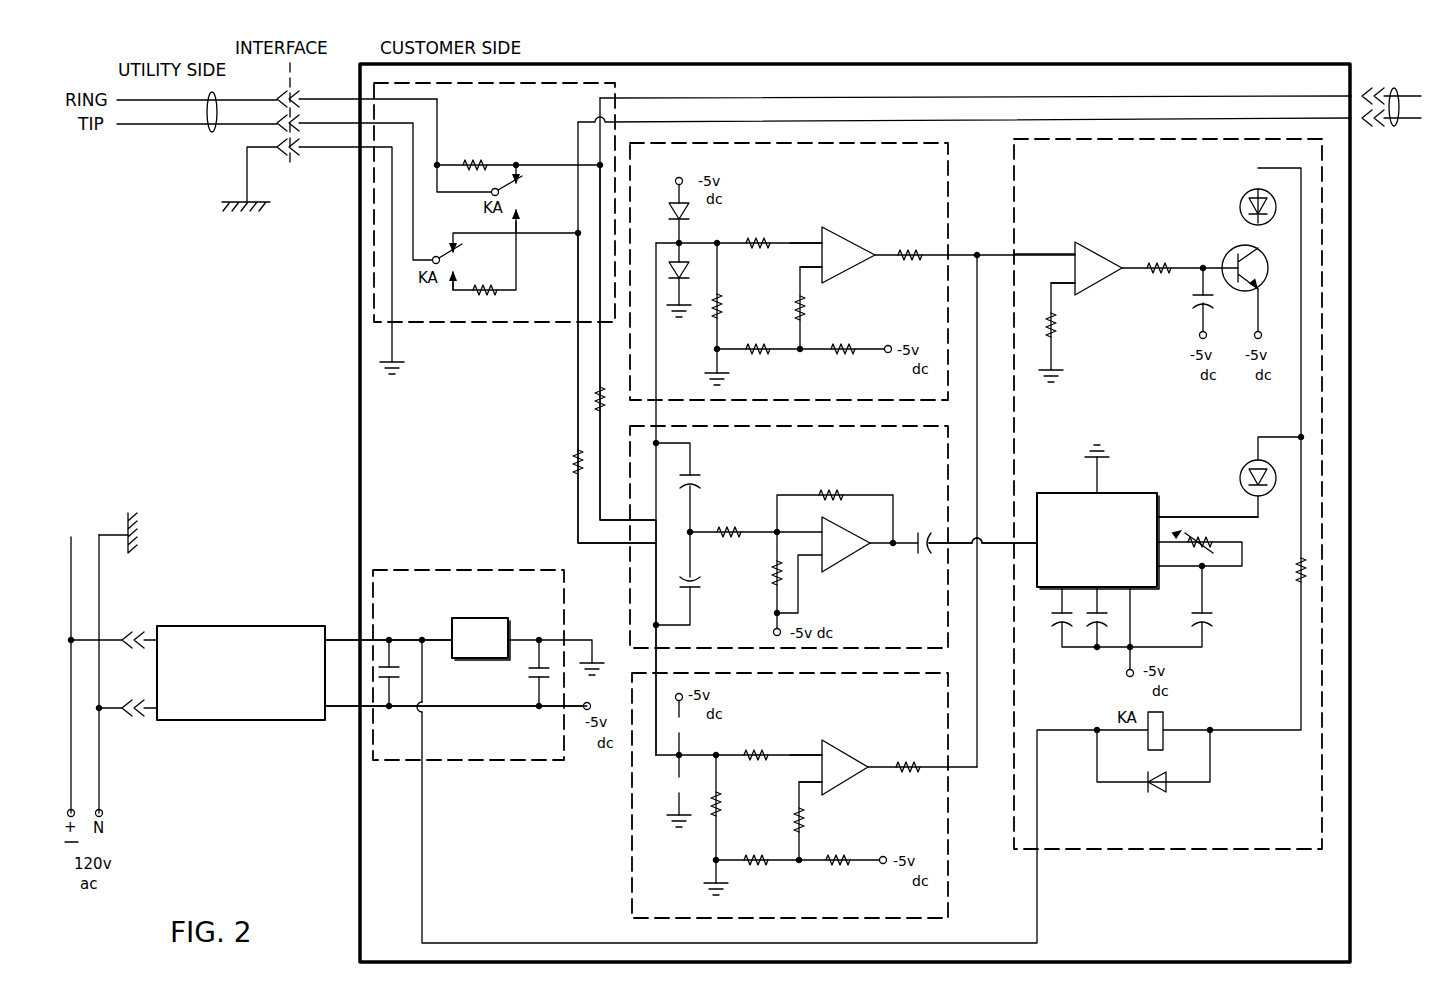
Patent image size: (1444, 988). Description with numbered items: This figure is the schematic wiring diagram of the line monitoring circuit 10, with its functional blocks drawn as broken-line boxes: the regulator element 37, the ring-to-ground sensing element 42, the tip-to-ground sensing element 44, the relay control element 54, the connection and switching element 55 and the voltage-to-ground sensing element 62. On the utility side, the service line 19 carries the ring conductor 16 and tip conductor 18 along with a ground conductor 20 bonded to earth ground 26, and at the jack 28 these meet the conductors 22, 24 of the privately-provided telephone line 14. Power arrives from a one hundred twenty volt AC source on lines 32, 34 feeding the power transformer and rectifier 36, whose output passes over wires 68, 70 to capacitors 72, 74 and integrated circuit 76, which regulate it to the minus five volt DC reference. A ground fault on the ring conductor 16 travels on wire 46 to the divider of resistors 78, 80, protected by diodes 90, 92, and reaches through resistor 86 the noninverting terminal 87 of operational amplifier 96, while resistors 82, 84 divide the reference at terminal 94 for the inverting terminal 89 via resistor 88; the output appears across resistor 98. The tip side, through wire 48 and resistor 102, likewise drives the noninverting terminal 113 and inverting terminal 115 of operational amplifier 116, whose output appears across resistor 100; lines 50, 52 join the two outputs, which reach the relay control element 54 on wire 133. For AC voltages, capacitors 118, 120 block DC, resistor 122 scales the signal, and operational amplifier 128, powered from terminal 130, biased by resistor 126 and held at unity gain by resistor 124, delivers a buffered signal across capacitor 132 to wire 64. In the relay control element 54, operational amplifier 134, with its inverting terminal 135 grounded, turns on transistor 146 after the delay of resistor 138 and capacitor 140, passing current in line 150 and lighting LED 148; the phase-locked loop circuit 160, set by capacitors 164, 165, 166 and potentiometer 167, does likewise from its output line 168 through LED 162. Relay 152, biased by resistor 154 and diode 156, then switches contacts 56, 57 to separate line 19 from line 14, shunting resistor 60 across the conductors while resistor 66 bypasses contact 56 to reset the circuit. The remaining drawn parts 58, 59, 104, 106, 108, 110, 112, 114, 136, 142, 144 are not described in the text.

The line monitoring circuit 10 is at (1360, 533).
The privately-provided telephone line 14 is at (1394, 127).
The ring conductor 16 is at (131, 126).
The tip conductor 18 is at (165, 126).
The service line 19 is at (211, 133).
The ground conductor 20 is at (340, 149).
The conductor 22 is at (1408, 96).
The conductor 24 is at (1410, 119).
The earth ground 26 is at (268, 204).
The jack 28 is at (292, 163).
The line 32 is at (71, 538).
The line 34 is at (101, 580).
The power transformer and rectifier 36 is at (266, 625).
The DC regulator element 37 is at (477, 762).
The ring-to-ground sensing element 42 is at (952, 176).
The tip-to-ground sensing element 44 is at (632, 823).
The wire 46 is at (600, 364).
The wire 48 is at (578, 430).
The line 50 is at (977, 250).
The line 52 is at (979, 431).
The relay control element 54 is at (1325, 232).
The connection and switching element 55 is at (471, 323).
The contact 56 is at (527, 184).
The contact 57 is at (465, 245).
The relay actuator 58 is at (527, 212).
The relay actuator 59 is at (462, 278).
The resistor 60 is at (497, 296).
The voltage-to-ground sensing element 62 is at (632, 578).
The wire 64 is at (988, 548).
The resistor 66 is at (470, 160).
The wire 68 is at (333, 638).
The wire 70 is at (505, 708).
The capacitor 72 is at (396, 664).
The capacitor 74 is at (528, 673).
The integrated circuit 76 is at (484, 617).
The resistor 78 is at (594, 399).
The resistor 80 is at (725, 311).
The resistor 82 is at (848, 357).
The resistor 84 is at (775, 357).
The resistor 86 is at (757, 237).
The noninverting terminal 87 is at (800, 239).
The resistor 88 is at (808, 309).
The inverting terminal 89 is at (798, 290).
The diode 90 is at (670, 217).
The diode 92 is at (690, 246).
The terminal 94 is at (890, 344).
The operational amplifier 96 is at (855, 236).
The resistor 98 is at (912, 246).
The resistor 100 is at (912, 759).
The resistor 102 is at (572, 465).
The resistor 104 is at (726, 804).
The resistor 106 is at (846, 868).
The resistor 108 is at (766, 868).
The supply terminal 110 is at (884, 856).
The resistor 112 is at (756, 747).
The noninverting terminal 113 is at (800, 751).
The resistor 114 is at (792, 826).
The inverting terminal 115 is at (806, 800).
The operational amplifier 116 is at (850, 749).
The capacitor 118 is at (703, 479).
The capacitor 120 is at (703, 579).
The resistor 122 is at (731, 524).
The resistor 124 is at (835, 489).
The resistor 126 is at (768, 581).
The operational amplifier 128 is at (840, 572).
The terminal 130 is at (772, 632).
The capacitor 132 is at (920, 556).
The noninverting terminal 133 is at (1038, 251).
The operational amplifier 134 is at (1105, 250).
The inverting terminal 135 is at (1058, 300).
The resistor 136 is at (1058, 340).
The resistor 138 is at (1150, 261).
The capacitor 140 is at (1192, 301).
The supply terminal 142 is at (1196, 337).
The supply terminal 144 is at (1252, 337).
The transistor 146 is at (1232, 247).
The light emitting diode 148 is at (1242, 200).
The line 150 is at (1324, 348).
The relay 152 is at (1166, 719).
The resistor 154 is at (1296, 578).
The diode 156 is at (1165, 796).
The integrated phase-locked loop circuit 160 is at (1135, 491).
The LED 162 is at (1242, 472).
The capacitor 164 is at (1060, 628).
The capacitor 165 is at (1096, 630).
The capacitor 166 is at (1218, 620).
The potentiometer 167 is at (1210, 531).
The output line 168 is at (1200, 514).